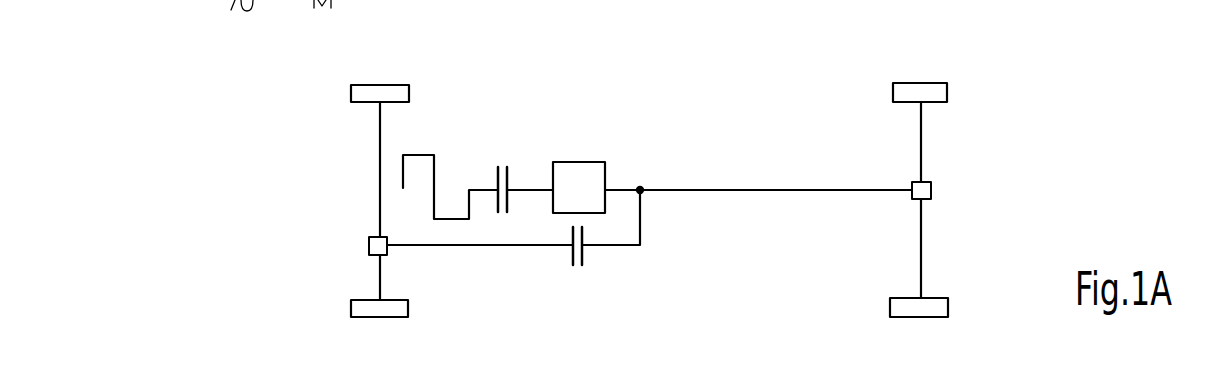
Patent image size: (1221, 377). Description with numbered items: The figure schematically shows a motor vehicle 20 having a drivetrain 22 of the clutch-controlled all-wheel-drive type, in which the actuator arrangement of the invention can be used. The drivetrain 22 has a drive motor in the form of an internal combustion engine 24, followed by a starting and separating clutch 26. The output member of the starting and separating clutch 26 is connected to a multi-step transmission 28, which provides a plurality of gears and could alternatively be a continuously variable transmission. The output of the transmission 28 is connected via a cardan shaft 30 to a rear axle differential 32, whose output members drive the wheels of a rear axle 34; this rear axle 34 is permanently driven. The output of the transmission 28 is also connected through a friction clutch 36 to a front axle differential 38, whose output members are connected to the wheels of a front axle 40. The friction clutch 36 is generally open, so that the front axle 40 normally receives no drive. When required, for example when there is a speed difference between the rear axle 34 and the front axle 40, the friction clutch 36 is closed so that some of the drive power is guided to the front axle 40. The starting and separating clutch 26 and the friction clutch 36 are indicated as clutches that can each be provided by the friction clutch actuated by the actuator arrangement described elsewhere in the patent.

The motor vehicle 20 is at (973, 148).
The drivetrain 22 is at (585, 152).
The internal combustion engine 24 is at (418, 155).
The starting and separating clutch 26 is at (508, 178).
The multi-step transmission 28 is at (606, 171).
The cardan shaft 30 is at (815, 193).
The rear axle differential 32 is at (932, 188).
The rear axle 34 is at (925, 243).
The friction clutch 36 is at (585, 253).
The front axle differential 38 is at (367, 243).
The front axle 40 is at (378, 180).